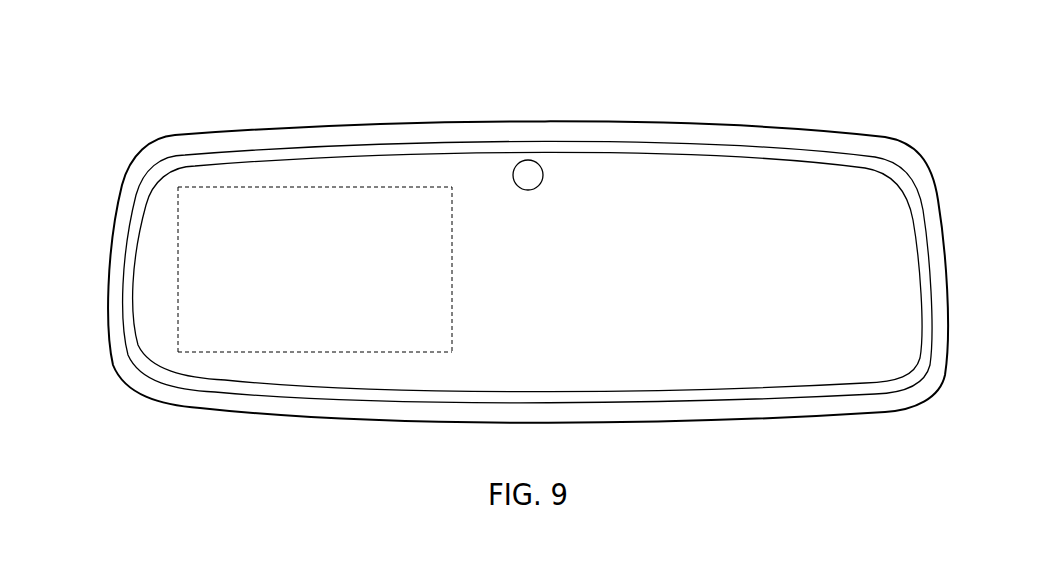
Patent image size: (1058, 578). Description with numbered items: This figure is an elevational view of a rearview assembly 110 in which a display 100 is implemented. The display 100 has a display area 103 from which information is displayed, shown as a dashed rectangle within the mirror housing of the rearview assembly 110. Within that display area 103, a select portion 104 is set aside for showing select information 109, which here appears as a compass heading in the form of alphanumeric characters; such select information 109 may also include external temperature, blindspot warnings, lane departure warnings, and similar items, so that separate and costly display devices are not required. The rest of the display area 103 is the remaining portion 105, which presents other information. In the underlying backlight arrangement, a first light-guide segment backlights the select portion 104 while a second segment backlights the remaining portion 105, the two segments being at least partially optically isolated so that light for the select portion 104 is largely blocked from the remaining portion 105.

The rearview assembly 110 is at (157, 123).
The display 100 is at (152, 303).
The select information 109 is at (193, 213).
The select portion 104 is at (206, 233).
The display area 103 is at (237, 353).
The remaining portion 105 is at (357, 338).